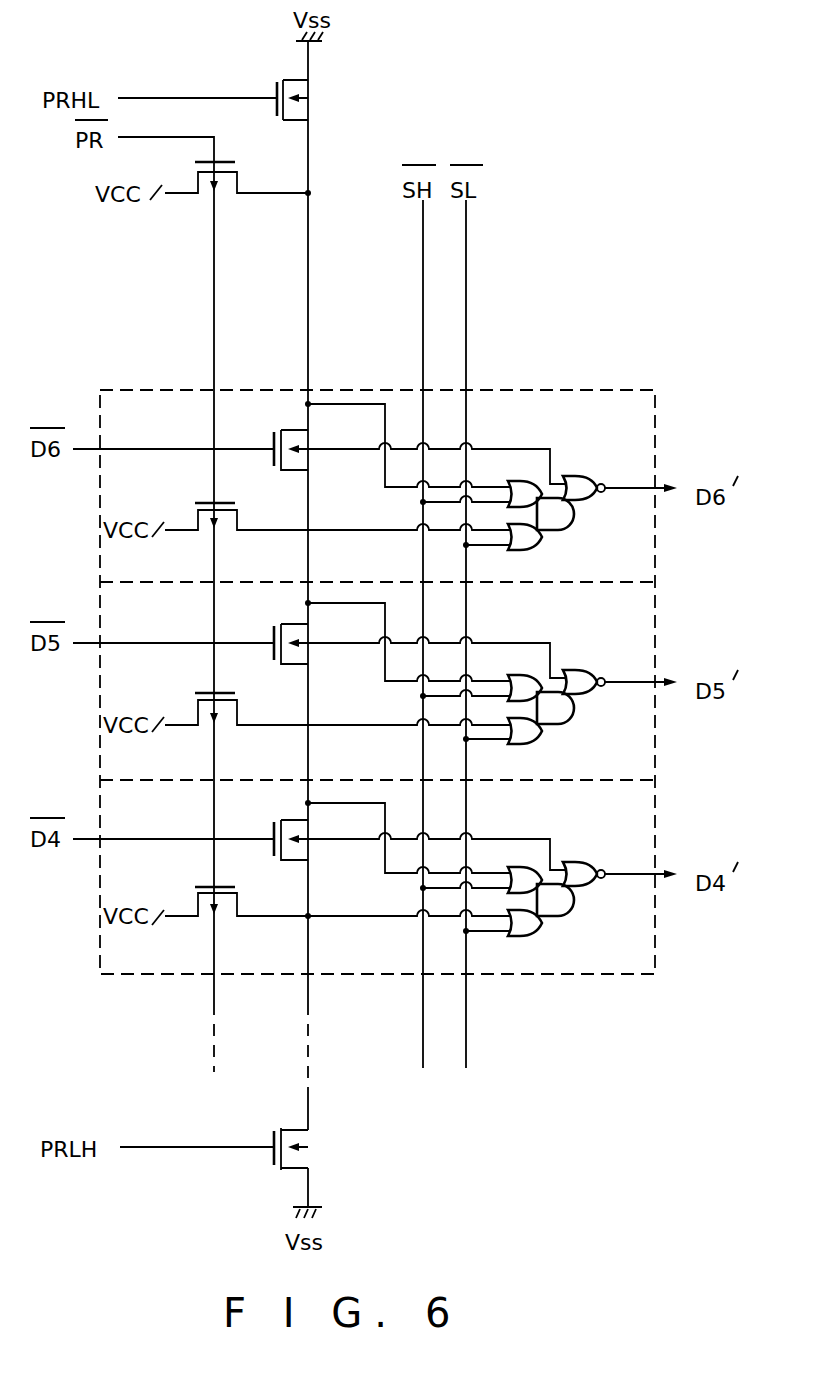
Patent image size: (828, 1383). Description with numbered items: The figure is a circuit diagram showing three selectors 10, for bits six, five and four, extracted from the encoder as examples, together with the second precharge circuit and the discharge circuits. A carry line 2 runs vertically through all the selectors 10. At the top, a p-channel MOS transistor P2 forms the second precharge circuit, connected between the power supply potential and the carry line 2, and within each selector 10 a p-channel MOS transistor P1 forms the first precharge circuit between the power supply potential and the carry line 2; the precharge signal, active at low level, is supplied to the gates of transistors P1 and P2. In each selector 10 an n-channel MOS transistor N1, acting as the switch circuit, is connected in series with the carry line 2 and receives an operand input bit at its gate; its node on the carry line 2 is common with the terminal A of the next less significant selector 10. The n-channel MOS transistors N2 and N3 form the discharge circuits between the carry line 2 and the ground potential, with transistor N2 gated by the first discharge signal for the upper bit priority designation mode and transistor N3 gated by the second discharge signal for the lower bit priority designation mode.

The carry line 2 is at (306, 357).
The selector 10 is at (656, 422).
The terminal A is at (306, 405).
The n-channel MOS transistor N1 is at (311, 643).
The n-channel MOS transistor N2 is at (314, 100).
The n-channel MOS transistor N3 is at (313, 1149).
The p-channel MOS transistor P1 is at (338, 729).
The p-channel MOS transistor P2 is at (238, 197).